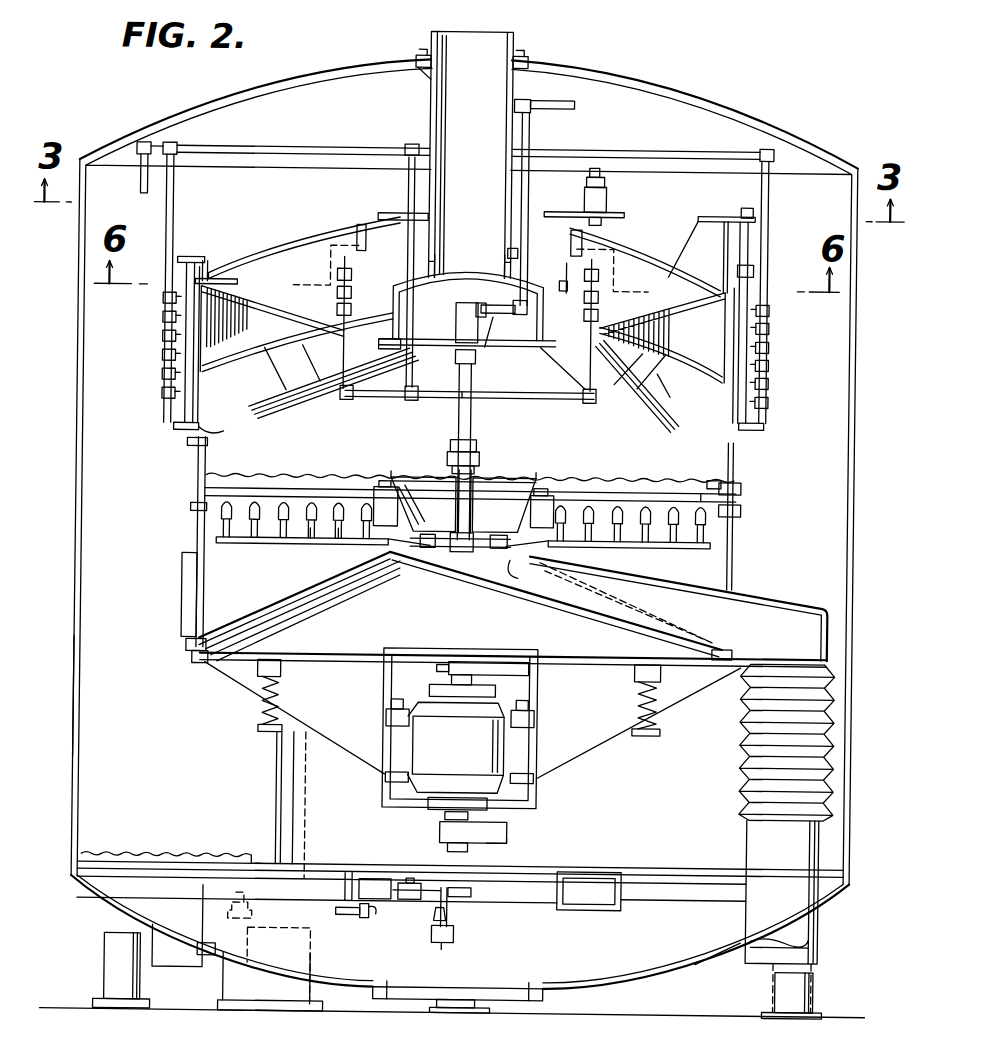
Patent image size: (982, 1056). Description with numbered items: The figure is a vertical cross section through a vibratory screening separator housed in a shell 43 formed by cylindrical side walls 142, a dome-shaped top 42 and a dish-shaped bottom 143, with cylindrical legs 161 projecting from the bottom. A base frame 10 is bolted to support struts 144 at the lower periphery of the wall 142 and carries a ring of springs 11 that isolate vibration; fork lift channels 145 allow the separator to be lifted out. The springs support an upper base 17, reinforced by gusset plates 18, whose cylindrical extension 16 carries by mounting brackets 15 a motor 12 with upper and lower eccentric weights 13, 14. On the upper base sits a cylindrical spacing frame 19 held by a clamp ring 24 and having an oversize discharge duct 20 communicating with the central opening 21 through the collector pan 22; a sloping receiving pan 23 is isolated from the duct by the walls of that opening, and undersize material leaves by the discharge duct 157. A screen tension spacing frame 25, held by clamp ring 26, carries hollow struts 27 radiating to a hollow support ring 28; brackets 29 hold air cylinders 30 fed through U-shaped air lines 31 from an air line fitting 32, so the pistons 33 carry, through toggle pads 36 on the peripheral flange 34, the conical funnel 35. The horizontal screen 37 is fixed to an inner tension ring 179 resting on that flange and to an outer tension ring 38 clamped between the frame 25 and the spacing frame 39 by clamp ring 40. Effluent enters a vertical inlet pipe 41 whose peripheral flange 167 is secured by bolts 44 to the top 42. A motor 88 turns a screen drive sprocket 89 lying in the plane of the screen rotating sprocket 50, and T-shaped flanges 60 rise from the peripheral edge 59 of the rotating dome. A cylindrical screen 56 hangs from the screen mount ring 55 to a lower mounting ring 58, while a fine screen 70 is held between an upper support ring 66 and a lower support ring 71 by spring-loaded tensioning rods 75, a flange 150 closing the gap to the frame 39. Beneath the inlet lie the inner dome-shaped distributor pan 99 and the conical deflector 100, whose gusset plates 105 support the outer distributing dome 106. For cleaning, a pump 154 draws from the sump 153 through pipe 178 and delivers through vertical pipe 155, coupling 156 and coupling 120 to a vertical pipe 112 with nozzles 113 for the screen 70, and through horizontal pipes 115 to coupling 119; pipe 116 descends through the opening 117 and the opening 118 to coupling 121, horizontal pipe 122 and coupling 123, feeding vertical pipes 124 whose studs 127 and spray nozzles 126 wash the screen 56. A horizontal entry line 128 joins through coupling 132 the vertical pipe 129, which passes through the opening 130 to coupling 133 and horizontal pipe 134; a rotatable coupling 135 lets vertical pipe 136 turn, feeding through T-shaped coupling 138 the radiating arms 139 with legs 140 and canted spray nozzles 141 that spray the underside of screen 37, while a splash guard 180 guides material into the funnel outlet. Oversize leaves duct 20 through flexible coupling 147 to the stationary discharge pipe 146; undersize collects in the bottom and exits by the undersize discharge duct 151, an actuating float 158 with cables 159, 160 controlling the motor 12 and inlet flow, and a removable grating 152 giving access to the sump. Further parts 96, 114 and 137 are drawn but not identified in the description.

The base frame 10 is at (279, 784).
The ring of springs 11 is at (264, 704).
The motor 12 is at (456, 752).
The upper eccentric weight 13 is at (466, 660).
The lower eccentric weight 14 is at (443, 833).
The mounting brackets 15 is at (537, 724).
The cylindrical extension 16 is at (388, 738).
The upper base 17 is at (340, 652).
The gusset plates 18 is at (588, 760).
The cylindrical spacing frame 19 is at (198, 540).
The discharge duct 20 is at (678, 609).
The cylindrical opening 21 is at (521, 570).
The collector pan 22 is at (340, 592).
The sloping receiving pan 23 is at (568, 608).
The clamp ring 24 is at (190, 660).
The screen tension spacing frame 25 is at (198, 494).
The clamp ring 26 is at (190, 511).
The hollow struts 27 is at (256, 486).
The hollow support ring 28 is at (580, 490).
The brackets 29 is at (392, 478).
The air cylinders 30 is at (422, 512).
The U-shaped air line 31 is at (386, 544).
The air line fitting 32 is at (742, 505).
The piston 33 is at (556, 478).
The peripheral flange 34 is at (398, 462).
The conical funnel 35 is at (400, 496).
The toggle pad 36 is at (590, 474).
The horizontal screen 37 is at (655, 490).
The outer tension ring 38 is at (718, 480).
The spacing frame 39 is at (734, 468).
The clamp ring 40 is at (742, 486).
The vertical inlet pipe 41 is at (476, 40).
The dome-shaped top 42 is at (662, 92).
The cylindrical shell 43 is at (864, 494).
The bolts 44 is at (410, 58).
The screen rotating sprocket 50 is at (376, 218).
The screen mount ring 55 is at (567, 252).
The cylindrical screen 56 is at (558, 284).
The lower mounting ring 58 is at (557, 362).
The peripheral edge 59 is at (215, 274).
The T-shaped flange 60 is at (715, 206).
The upper circular screen support ring 66 is at (199, 250).
The fine screen 70 is at (735, 403).
The lower support ring 71 is at (180, 448).
The spring-loaded tensioning rod 75 is at (175, 430).
The motor 88 is at (602, 194).
The screen drive sprocket 89 is at (605, 215).
The bore 96 is at (458, 255).
The inner dome-shaped distributor pan 99 is at (378, 343).
The conical deflector 100 is at (264, 405).
The gusset plates 105 is at (650, 386).
The outer distributing dome 106 is at (685, 350).
The vertical pipe 112 is at (175, 214).
The nozzles 113 is at (168, 392).
The fitting 114 is at (158, 366).
The horizontal pipes 115 is at (288, 148).
The pipe 116 is at (432, 346).
The opening 117 is at (396, 228).
The opening 118 is at (394, 294).
The coupling 119 is at (408, 145).
The coupling 120 is at (172, 150).
The coupling 121 is at (408, 400).
The horizontal pipe 122 is at (496, 399).
The coupling 123 is at (338, 400).
The vertical pipes 124 is at (298, 372).
The spray nozzles 126 is at (334, 275).
The studs 127 is at (334, 308).
The horizontal entry line 128 is at (569, 103).
The vertical pipe 129 is at (517, 198).
The opening 130 is at (506, 250).
The coupling 132 is at (527, 110).
The coupling 133 is at (500, 332).
The horizontal pipe 134 is at (489, 338).
The rotatable coupling 135 is at (454, 326).
The vertical pipe 136 is at (478, 450).
The collar 137 is at (444, 462).
The T-shaped coupling 138 is at (470, 556).
The radiating arms 139 is at (298, 547).
The legs 140 is at (229, 530).
The spray nozzle 141 is at (338, 500).
The cylindrical side walls 142 is at (74, 672).
The dish-shaped bottom 143 is at (706, 958).
The support struts 144 is at (680, 878).
The fork lift channels 145 is at (600, 906).
The stationary discharge pipe 146 is at (750, 850).
The flexible coupling 147 is at (745, 745).
The flange 150 is at (214, 436).
The undersize discharge duct 151 is at (528, 1002).
The removable screen or grating 152 is at (186, 857).
The sump 153 is at (182, 925).
The pump 154 is at (240, 992).
The vertical pipe 155 is at (136, 186).
The coupling 156 is at (139, 146).
The discharge duct 157 is at (186, 586).
The actuating float 158 is at (460, 936).
The cable 159 is at (472, 897).
The cable 160 is at (355, 916).
The elongated cylindrical legs 161 is at (112, 985).
The peripheral flange 167 is at (402, 87).
The pipe 178 is at (246, 948).
The inner tension ring 179 is at (443, 490).
The splash guard 180 is at (441, 556).